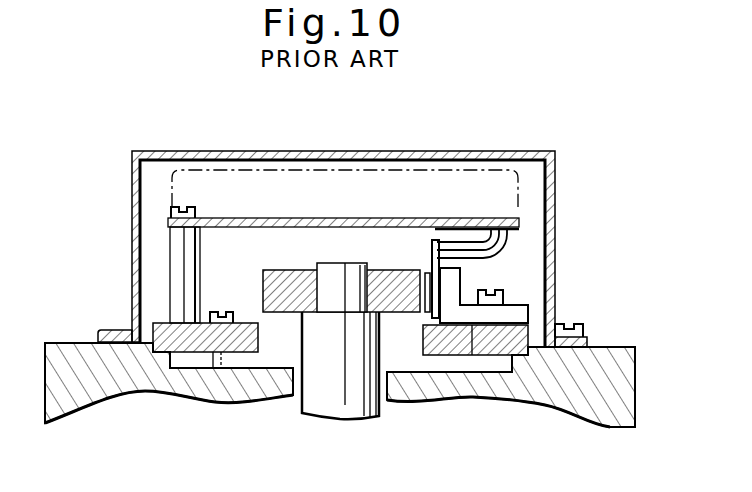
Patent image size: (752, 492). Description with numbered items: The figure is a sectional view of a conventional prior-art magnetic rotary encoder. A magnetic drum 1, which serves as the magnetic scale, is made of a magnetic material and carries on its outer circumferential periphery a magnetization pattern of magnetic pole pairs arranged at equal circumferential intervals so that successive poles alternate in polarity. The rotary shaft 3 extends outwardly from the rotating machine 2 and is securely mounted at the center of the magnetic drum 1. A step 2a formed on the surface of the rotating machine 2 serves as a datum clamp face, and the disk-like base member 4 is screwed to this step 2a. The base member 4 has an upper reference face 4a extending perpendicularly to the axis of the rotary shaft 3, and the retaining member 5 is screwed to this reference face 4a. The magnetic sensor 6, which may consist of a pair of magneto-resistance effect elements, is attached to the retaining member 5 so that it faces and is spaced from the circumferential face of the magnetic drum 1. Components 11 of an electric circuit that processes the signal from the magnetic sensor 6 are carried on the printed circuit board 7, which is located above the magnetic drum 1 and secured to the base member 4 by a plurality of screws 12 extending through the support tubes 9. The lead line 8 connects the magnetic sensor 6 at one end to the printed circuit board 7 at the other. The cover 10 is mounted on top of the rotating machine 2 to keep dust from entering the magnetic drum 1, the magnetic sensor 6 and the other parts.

The magnetic drum 1 is at (386, 270).
The rotating machine 2 is at (636, 416).
The step 2a is at (518, 360).
The rotary shaft 3 is at (336, 416).
The base member 4 is at (152, 324).
The upper reference face 4a is at (473, 355).
The retaining member 5 is at (521, 316).
The magnetic sensor 6 is at (427, 316).
The printed circuit board 7 is at (168, 222).
The lead line 8 is at (500, 246).
The support tubes 9 is at (171, 279).
The cover 10 is at (269, 151).
The components of an electric circuit 11 is at (217, 168).
The screws 12 is at (171, 210).